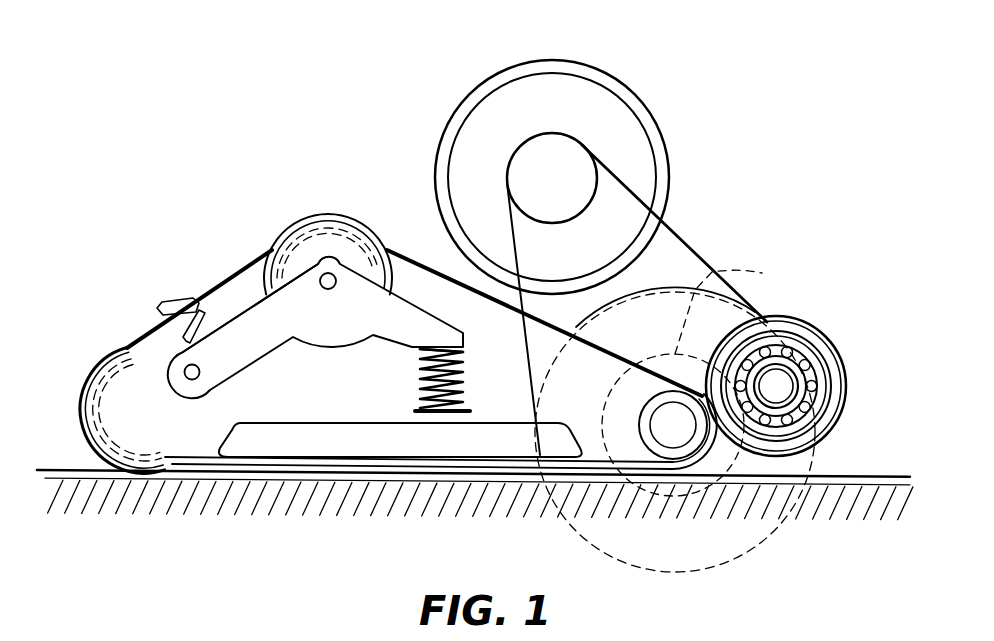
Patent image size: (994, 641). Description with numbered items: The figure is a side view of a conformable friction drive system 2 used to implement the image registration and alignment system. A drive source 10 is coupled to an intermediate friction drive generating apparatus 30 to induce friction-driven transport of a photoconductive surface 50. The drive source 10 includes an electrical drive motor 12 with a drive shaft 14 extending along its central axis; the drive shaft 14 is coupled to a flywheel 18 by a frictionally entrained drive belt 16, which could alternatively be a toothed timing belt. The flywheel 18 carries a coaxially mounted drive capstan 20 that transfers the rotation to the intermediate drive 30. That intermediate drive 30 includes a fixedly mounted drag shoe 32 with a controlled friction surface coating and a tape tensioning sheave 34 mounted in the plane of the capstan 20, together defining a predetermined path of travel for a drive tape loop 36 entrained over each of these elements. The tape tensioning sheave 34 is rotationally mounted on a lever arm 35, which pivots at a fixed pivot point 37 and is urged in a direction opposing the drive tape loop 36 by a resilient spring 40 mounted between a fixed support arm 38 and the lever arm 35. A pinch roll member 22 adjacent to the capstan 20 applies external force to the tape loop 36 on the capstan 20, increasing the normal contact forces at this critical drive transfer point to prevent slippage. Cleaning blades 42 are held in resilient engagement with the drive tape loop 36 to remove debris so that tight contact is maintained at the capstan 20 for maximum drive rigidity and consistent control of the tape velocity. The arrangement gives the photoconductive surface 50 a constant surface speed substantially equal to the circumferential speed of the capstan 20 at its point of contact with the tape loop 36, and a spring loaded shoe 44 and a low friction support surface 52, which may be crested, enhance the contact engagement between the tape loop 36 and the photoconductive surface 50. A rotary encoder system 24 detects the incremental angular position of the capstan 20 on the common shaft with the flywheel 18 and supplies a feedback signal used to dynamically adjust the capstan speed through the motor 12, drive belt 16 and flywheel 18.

The conformable friction drive system 2 is at (306, 47).
The drive source 10 is at (775, 161).
The electrical drive motor 12 is at (627, 90).
The drive shaft 14 is at (569, 152).
The drive belt 16 is at (683, 240).
The flywheel 18 is at (797, 466).
The drive capstan 20 is at (695, 463).
The pinch roll member 22 is at (807, 322).
The rotary encoder system 24 is at (675, 416).
The intermediate friction drive generating apparatus 30 is at (206, 157).
The drag shoe 32 is at (83, 430).
The tape tensioning sheave 34 is at (332, 215).
The lever arm 35 is at (218, 358).
The drive tape loop 36 is at (223, 270).
The fixed pivot point 37 is at (180, 388).
The fixed support arm 38 is at (422, 407).
The resilient spring 40 is at (423, 362).
The cleaning blades 42 is at (165, 320).
The spring loaded shoe 44 is at (315, 430).
The photoconductive surface 50 is at (876, 470).
The low friction support surface 52 is at (240, 500).